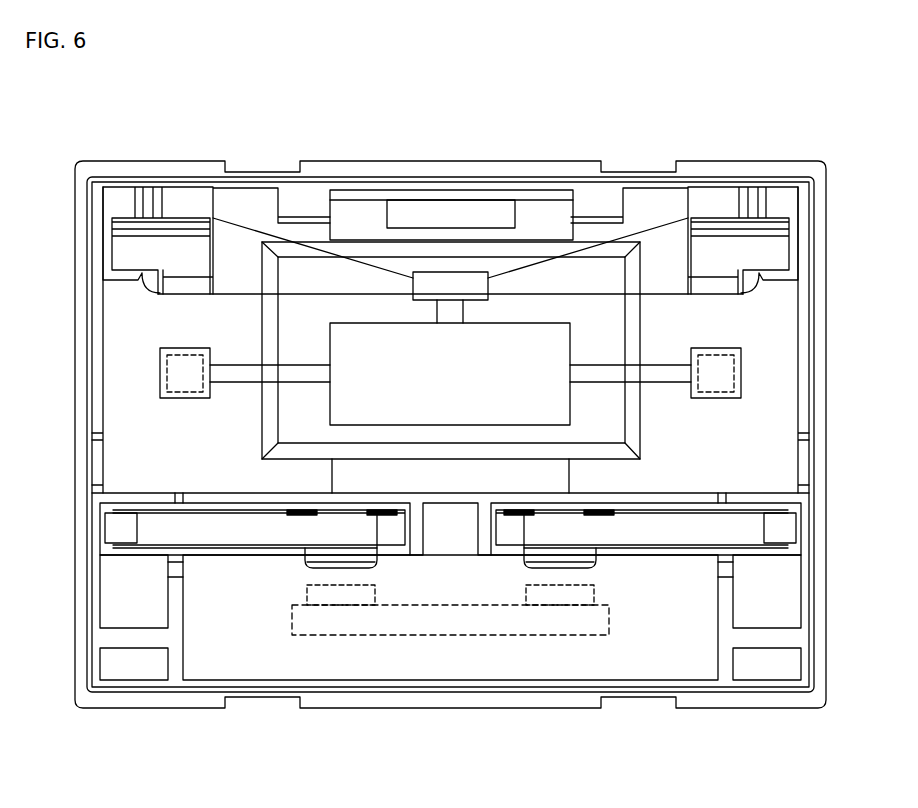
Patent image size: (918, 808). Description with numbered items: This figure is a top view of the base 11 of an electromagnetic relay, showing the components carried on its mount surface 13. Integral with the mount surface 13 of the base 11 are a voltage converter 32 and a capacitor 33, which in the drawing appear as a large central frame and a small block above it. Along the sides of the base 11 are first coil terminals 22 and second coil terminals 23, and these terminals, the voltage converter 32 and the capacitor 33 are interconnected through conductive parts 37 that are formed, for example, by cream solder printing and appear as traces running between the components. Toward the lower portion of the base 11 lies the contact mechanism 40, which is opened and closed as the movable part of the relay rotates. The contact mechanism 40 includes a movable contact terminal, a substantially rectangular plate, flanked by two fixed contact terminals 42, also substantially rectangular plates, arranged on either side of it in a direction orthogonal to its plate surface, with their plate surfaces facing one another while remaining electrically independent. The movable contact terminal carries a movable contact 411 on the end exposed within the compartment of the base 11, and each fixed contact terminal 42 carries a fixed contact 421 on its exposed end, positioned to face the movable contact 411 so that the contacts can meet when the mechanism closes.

The base 11 is at (829, 420).
The mount surface 13 is at (118, 463).
The first coil terminals 22 is at (120, 258).
The second coil terminals 23 is at (160, 378).
The voltage converter 32 is at (560, 412).
The capacitor 33 is at (447, 272).
The conductive parts 37 is at (240, 237).
The contact mechanism 40 is at (354, 655).
The fixed contact terminals 42 is at (120, 528).
The movable contact 411 is at (302, 571).
The fixed contact 421 is at (358, 568).